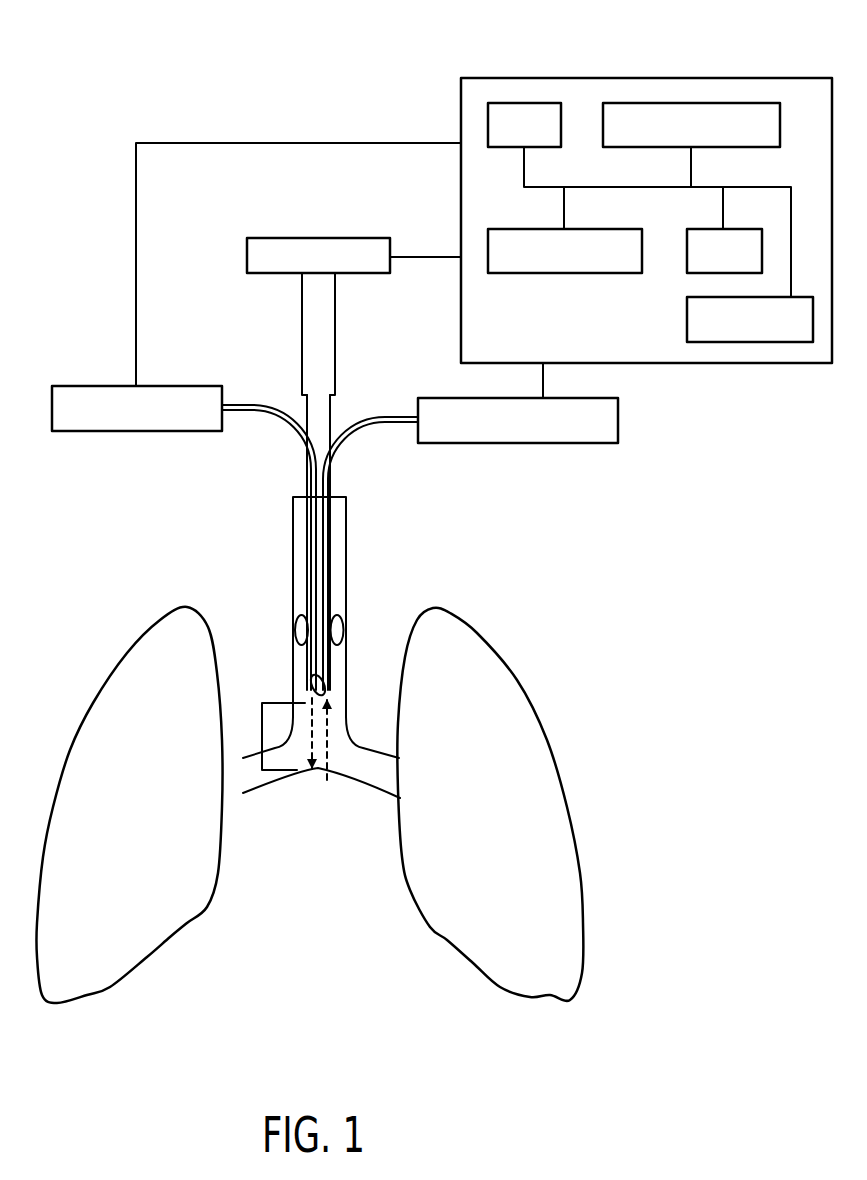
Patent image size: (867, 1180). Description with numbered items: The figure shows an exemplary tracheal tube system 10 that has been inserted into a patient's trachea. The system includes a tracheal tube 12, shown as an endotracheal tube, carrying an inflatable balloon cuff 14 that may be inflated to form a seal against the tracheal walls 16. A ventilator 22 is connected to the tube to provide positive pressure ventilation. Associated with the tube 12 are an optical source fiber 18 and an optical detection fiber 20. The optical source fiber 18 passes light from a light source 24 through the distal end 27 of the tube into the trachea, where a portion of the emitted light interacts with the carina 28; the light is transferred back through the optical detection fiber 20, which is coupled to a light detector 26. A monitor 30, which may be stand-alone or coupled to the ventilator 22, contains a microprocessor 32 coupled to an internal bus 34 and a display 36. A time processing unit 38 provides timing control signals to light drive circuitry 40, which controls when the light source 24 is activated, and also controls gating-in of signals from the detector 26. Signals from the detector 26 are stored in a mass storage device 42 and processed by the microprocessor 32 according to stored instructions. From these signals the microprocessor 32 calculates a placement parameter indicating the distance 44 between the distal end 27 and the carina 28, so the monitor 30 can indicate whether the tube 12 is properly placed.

The tracheal tube system 10 is at (84, 73).
The tracheal tube 12 is at (322, 496).
The inflatable balloon cuff 14 is at (342, 615).
The tracheal walls 16 is at (293, 526).
The optical source fiber 18 is at (253, 408).
The optical detection fiber 20 is at (380, 420).
The ventilator 22 is at (318, 238).
The light source 24 is at (135, 432).
The light detector 26 is at (525, 443).
The distal end 27 is at (323, 690).
The carina 28 is at (318, 803).
The monitor 30 is at (647, 78).
The microprocessor 32 is at (564, 136).
The internal bus 34 is at (524, 168).
The display 36 is at (687, 322).
The time processing unit 38 is at (718, 228).
The light drive circuitry 40 is at (565, 273).
The mass storage device 42 is at (668, 148).
The distance 44 is at (253, 722).